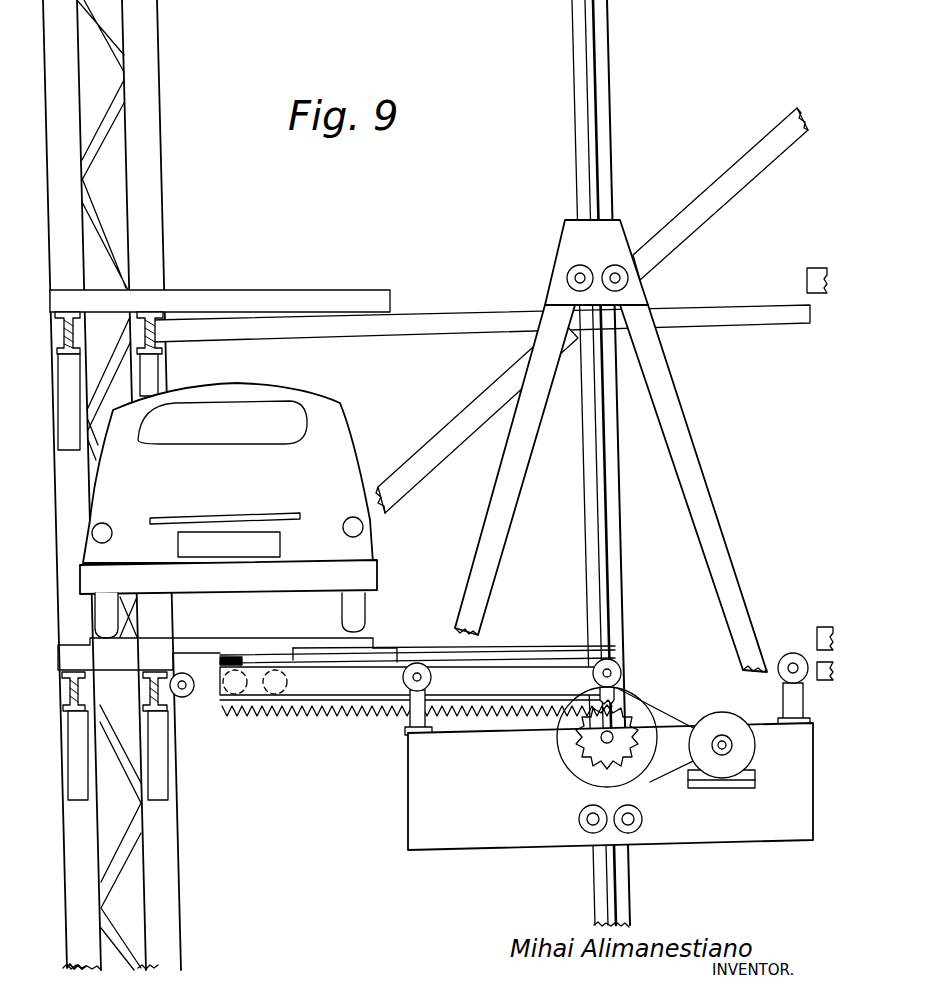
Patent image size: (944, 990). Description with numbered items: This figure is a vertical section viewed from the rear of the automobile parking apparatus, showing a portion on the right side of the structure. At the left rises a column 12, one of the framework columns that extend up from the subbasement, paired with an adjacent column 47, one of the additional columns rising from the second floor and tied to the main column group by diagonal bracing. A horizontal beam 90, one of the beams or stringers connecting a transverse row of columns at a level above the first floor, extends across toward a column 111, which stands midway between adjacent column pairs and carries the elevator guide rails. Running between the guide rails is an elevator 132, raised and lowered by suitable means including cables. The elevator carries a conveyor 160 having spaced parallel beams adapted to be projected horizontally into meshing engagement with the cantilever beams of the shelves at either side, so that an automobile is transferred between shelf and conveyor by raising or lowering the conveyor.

The column 12 is at (67, 62).
The column 47 is at (147, 40).
The horizontal beam 90 is at (447, 318).
The column 111 is at (602, 60).
The conveyor 160 is at (250, 640).
The elevator 132 is at (405, 782).